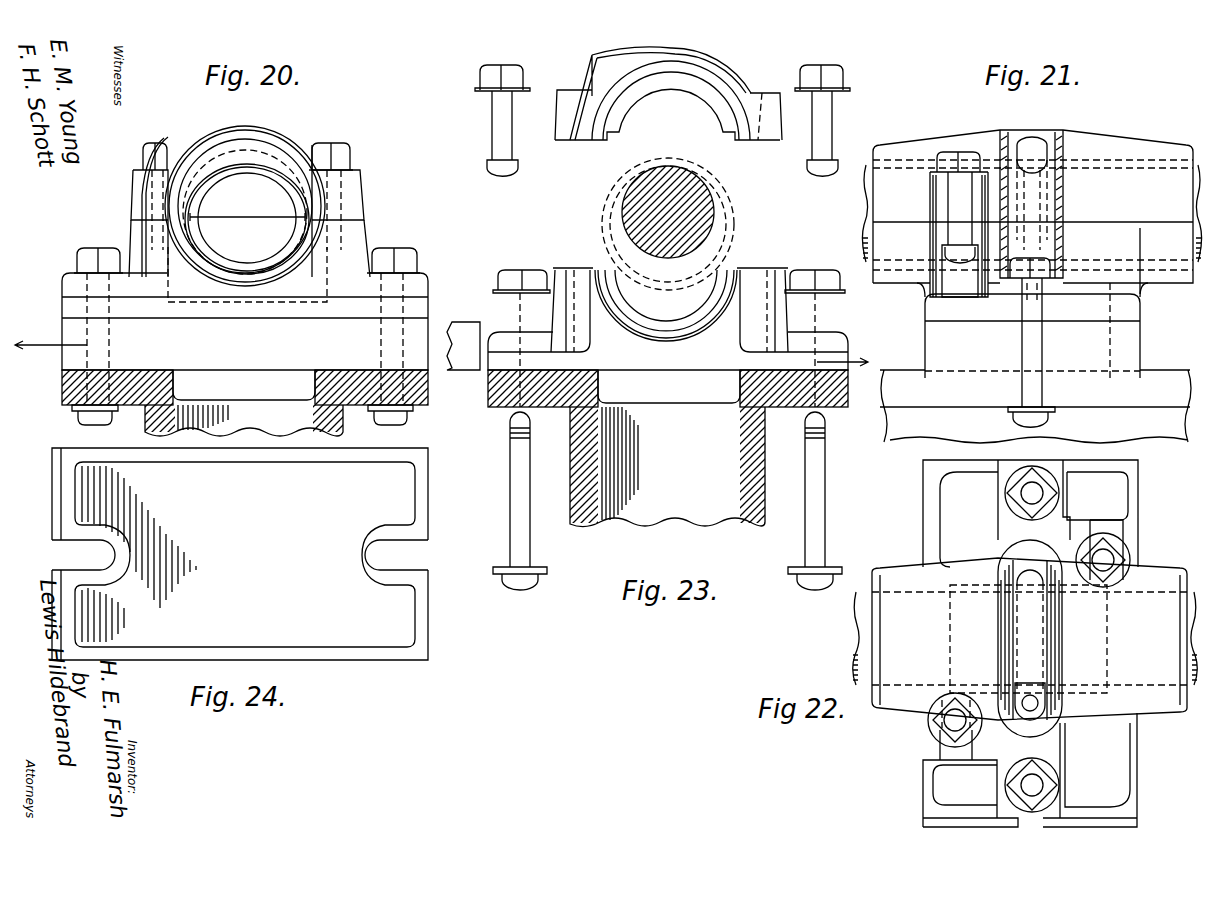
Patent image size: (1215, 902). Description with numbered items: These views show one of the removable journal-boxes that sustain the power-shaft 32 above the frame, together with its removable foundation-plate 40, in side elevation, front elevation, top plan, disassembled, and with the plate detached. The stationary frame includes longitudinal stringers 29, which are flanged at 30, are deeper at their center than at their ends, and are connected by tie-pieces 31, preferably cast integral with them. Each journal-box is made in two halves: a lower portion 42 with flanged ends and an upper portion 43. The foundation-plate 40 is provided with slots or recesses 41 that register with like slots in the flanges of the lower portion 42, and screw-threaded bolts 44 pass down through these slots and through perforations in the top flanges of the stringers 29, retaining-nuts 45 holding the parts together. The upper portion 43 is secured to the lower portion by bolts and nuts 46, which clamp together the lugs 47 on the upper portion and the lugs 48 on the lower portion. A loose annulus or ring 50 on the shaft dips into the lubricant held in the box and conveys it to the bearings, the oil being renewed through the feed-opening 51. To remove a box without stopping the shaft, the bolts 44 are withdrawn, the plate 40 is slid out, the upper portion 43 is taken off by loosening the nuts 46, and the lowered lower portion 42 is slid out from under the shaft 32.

In FIG. 20, the longitudinal stringers 29 is at (178, 400).
In FIG. 23, the longitudinal stringers 29 is at (606, 399).
In FIG. 20, the flange of stringer 30 is at (62, 390).
In FIG. 23, the flange of stringer 30 is at (490, 406).
In FIG. 21, the flange of stringer 30 is at (1035, 406).
In FIG. 20, the tie-pieces 31 is at (244, 420).
In FIG. 23, the tie-pieces 31 is at (667, 467).
In FIG. 23, the power-shaft 32 is at (626, 209).
In FIG. 21, the power-shaft 32 is at (866, 200).
In FIG. 22, the power-shaft 32 is at (858, 633).
In FIG. 20, the foundation-plate 40 is at (248, 321).
In FIG. 24, the foundation-plate 40 is at (240, 554).
In FIG. 24, the slots or recesses 41 is at (65, 545).
In FIG. 20, the lower portion of journal-box 42 is at (262, 281).
In FIG. 23, the lower portion of journal-box 42 is at (678, 319).
In FIG. 21, the lower portion of journal-box 42 is at (1053, 303).
In FIG. 20, the upper portion of journal-box 43 is at (286, 134).
In FIG. 23, the upper portion of journal-box 43 is at (712, 92).
In FIG. 21, the upper portion of journal-box 43 is at (1033, 213).
In FIG. 22, the upper portion of journal-box 43 is at (1029, 638).
In FIG. 20, the screw-threaded bolts 44 is at (396, 360).
In FIG. 23, the screw-threaded bolts 44 is at (518, 487).
In FIG. 21, the screw-threaded bolts 44 is at (1035, 358).
In FIG. 20, the retaining-nuts 45 is at (80, 263).
In FIG. 23, the retaining-nuts 45 is at (503, 272).
In FIG. 21, the retaining-nuts 45 is at (1045, 270).
In FIG. 22, the retaining-nuts 45 is at (1020, 493).
In FIG. 20, the bolts and nuts 46 is at (150, 157).
In FIG. 23, the bolts and nuts 46 is at (506, 128).
In FIG. 21, the bolts and nuts 46 is at (958, 200).
In FIG. 22, the bolts and nuts 46 is at (953, 710).
In FIG. 20, the lugs of upper portion 47 is at (137, 193).
In FIG. 23, the lugs of upper portion 47 is at (562, 118).
In FIG. 21, the lugs of upper portion 47 is at (930, 184).
In FIG. 22, the lugs of upper portion 47 is at (1130, 537).
In FIG. 20, the lugs of lower portion 48 is at (135, 234).
In FIG. 21, the lugs of lower portion 48 is at (936, 238).
In FIG. 20, the loose annulus or ring 50 is at (193, 219).
In FIG. 23, the loose annulus or ring 50 is at (735, 218).
In FIG. 21, the loose annulus or ring 50 is at (1030, 290).
In FIG. 21, the feed-opening 51 is at (1026, 140).
In FIG. 22, the feed-opening 51 is at (1045, 700).